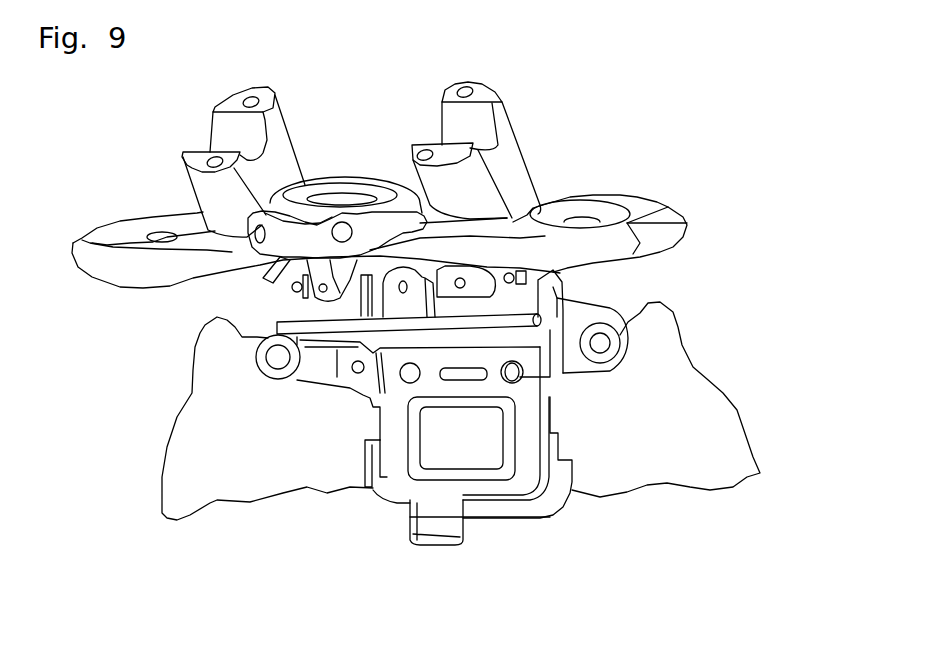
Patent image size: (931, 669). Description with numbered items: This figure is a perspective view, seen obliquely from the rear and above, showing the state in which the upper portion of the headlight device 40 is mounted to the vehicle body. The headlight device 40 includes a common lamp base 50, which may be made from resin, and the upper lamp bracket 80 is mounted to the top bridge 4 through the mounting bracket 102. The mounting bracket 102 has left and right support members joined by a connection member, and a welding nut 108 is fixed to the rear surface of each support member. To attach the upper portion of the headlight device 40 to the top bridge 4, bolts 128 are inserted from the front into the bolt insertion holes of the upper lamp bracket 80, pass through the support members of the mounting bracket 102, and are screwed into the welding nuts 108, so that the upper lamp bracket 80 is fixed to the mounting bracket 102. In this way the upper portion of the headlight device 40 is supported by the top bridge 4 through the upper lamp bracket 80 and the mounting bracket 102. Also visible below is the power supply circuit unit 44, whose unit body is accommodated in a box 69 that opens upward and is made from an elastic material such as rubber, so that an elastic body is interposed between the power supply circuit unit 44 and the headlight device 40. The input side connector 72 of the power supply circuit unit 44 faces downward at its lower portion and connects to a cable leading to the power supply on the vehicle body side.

The top bridge 4 is at (642, 203).
The bolt 128 is at (512, 272).
The welding nut 108 is at (553, 273).
The mounting bracket 102 is at (318, 313).
The upper lamp bracket 80 is at (387, 470).
The input side connector 72 is at (437, 520).
The power supply circuit unit 44 is at (477, 524).
The box 69 is at (517, 512).
The lamp base 50 is at (479, 411).
The headlight device 40 is at (763, 383).